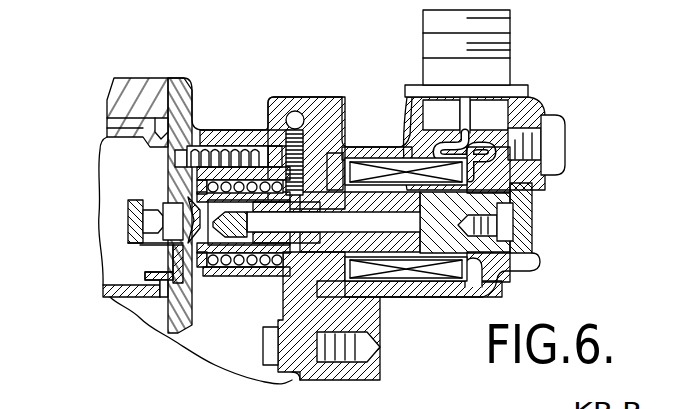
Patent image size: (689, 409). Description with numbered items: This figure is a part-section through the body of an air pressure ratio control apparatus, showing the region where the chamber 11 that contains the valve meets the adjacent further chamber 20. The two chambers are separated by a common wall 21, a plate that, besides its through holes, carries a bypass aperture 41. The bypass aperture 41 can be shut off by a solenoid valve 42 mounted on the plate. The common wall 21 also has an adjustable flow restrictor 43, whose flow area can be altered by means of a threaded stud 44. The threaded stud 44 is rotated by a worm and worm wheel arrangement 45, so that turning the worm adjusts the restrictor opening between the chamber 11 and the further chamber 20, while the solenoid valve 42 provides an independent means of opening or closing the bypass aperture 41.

The chamber 11 is at (192, 313).
The further chamber 20 is at (127, 153).
The common wall 21 is at (180, 178).
The bypass aperture 41 is at (133, 223).
The solenoid valve 42 is at (238, 286).
The adjustable flow restrictor 43 is at (196, 128).
The threaded stud 44 is at (246, 135).
The worm and worm wheel arrangement 45 is at (307, 88).